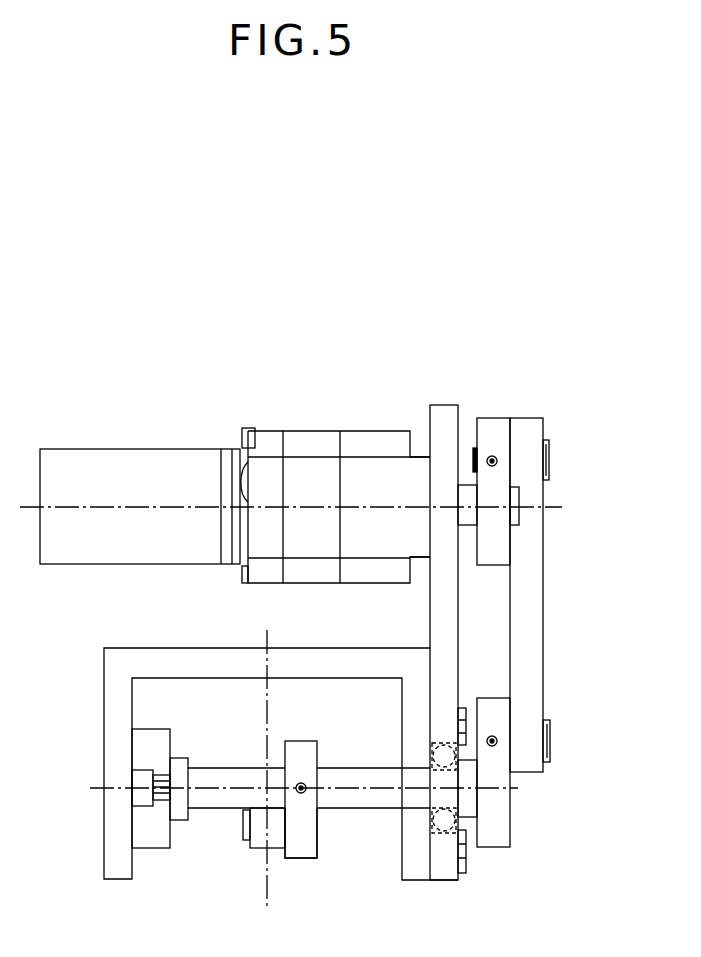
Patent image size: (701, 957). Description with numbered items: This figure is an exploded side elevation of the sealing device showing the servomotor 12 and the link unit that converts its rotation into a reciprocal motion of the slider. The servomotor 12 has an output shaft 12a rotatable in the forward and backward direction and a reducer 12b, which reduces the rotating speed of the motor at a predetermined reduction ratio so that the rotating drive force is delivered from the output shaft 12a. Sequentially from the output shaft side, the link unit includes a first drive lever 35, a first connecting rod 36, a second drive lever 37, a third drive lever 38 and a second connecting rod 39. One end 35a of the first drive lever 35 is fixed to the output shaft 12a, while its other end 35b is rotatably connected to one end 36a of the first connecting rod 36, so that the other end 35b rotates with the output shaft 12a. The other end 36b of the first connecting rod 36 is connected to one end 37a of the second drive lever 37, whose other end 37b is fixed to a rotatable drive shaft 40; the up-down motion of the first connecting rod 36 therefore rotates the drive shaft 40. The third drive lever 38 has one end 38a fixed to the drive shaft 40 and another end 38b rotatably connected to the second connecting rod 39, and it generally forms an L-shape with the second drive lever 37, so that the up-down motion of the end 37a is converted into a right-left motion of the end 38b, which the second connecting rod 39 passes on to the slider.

The servomotor 12 is at (150, 480).
The output shaft 12a is at (469, 500).
The reducer 12b is at (330, 480).
The first drive lever 35 is at (497, 540).
The one end of the first drive lever 35a is at (483, 517).
The other end of the first drive lever 35b is at (493, 454).
The first connecting rod 36 is at (525, 594).
The one end of the first connecting rod 36a is at (525, 467).
The other end of the first connecting rod 36b is at (525, 747).
The second drive lever 37 is at (510, 775).
The one end of the second drive lever 37a is at (505, 712).
The other end of the second drive lever 37b is at (488, 796).
The third drive lever 38 is at (300, 813).
The one end of the third drive lever 38a is at (303, 786).
The other end of the third drive lever 38b is at (297, 834).
The second connecting rod 39 is at (263, 830).
The drive shaft 40 is at (218, 780).